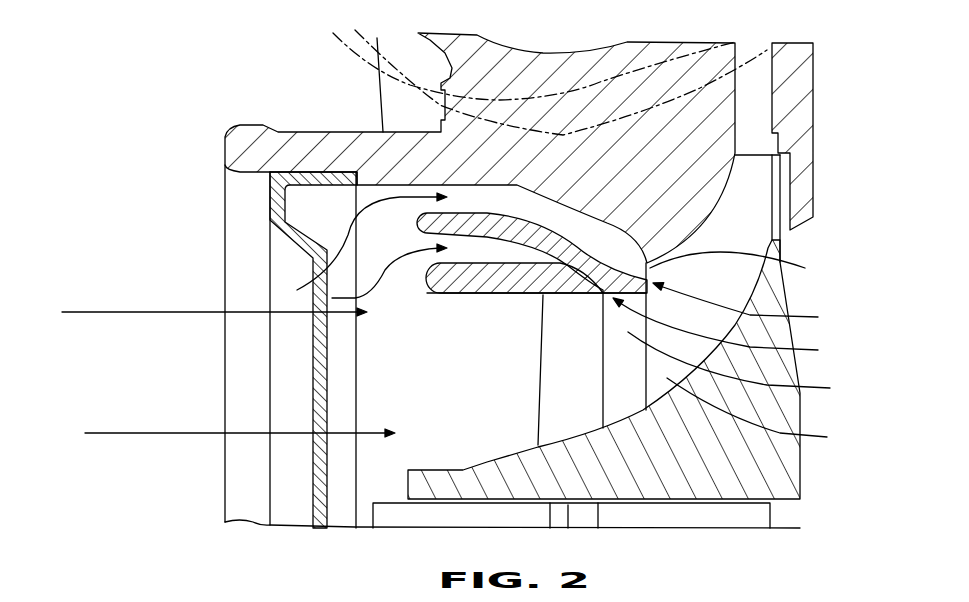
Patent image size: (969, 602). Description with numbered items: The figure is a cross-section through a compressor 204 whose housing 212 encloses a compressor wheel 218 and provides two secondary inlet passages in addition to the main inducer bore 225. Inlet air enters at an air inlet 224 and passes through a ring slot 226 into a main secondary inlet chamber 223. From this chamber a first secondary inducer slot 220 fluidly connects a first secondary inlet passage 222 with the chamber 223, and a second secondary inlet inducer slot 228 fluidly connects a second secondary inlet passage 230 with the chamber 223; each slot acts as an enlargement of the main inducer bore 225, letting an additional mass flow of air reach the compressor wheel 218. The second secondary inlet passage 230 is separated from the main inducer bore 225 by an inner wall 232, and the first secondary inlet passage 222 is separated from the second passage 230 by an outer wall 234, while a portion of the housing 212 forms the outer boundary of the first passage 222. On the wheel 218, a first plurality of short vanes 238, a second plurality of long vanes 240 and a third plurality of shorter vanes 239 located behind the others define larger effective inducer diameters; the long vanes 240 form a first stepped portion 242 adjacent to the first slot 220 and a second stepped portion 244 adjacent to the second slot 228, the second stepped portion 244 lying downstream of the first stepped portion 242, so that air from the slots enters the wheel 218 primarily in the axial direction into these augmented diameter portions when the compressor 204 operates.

The compressor 204 is at (210, 487).
The housing 212 is at (310, 138).
The compressor wheel 218 is at (727, 474).
The first secondary inducer slot 220 is at (578, 296).
The first secondary inlet passage 222 is at (492, 253).
The main secondary inlet chamber 223 is at (412, 248).
The air inlet 224 is at (190, 358).
The main inducer bore 225 is at (450, 297).
The ring slot 226 is at (385, 270).
The second secondary inlet inducer slot 228 is at (628, 255).
The second secondary inlet passage 230 is at (600, 223).
The inner wall 232 is at (545, 295).
The outer wall 234 is at (356, 203).
The short vanes 238 is at (752, 367).
The shorter vanes 239 is at (769, 416).
The long vanes 240 is at (590, 418).
The first stepped portion 242 is at (737, 330).
The second stepped portion 244 is at (757, 303).